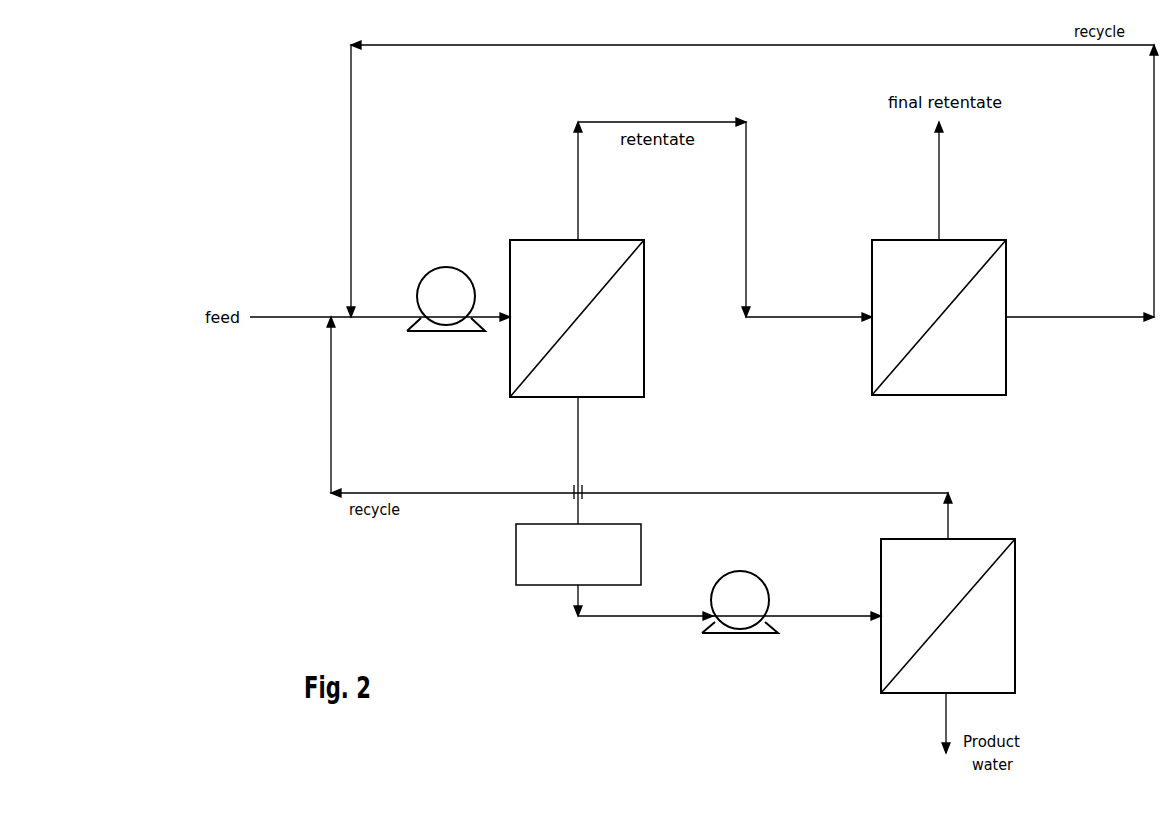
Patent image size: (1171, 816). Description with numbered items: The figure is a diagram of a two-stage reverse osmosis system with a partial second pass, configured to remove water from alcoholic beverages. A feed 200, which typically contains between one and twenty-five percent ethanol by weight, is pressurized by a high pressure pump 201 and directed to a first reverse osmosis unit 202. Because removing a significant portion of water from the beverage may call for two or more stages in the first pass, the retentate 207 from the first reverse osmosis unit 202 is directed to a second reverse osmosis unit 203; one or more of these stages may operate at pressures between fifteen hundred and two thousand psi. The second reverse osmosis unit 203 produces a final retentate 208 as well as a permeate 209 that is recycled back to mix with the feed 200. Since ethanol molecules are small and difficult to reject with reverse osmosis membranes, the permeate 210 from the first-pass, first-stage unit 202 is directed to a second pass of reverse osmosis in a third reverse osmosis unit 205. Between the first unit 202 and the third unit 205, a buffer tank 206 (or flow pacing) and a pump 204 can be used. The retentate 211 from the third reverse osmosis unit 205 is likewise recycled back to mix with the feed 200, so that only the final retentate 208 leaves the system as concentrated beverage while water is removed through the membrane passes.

The feed 200 is at (226, 297).
The high pressure pump 201 is at (445, 267).
The first reverse osmosis unit 202 is at (510, 378).
The second reverse osmosis unit 203 is at (997, 395).
The pump 204 is at (704, 635).
The third reverse osmosis unit 205 is at (1015, 585).
The break tank 206 is at (578, 554).
The retentate 207 is at (578, 218).
The final retentate 208 is at (939, 185).
The permeate 209 is at (1060, 315).
The permeate 210 is at (578, 455).
The retentate 211 is at (851, 491).